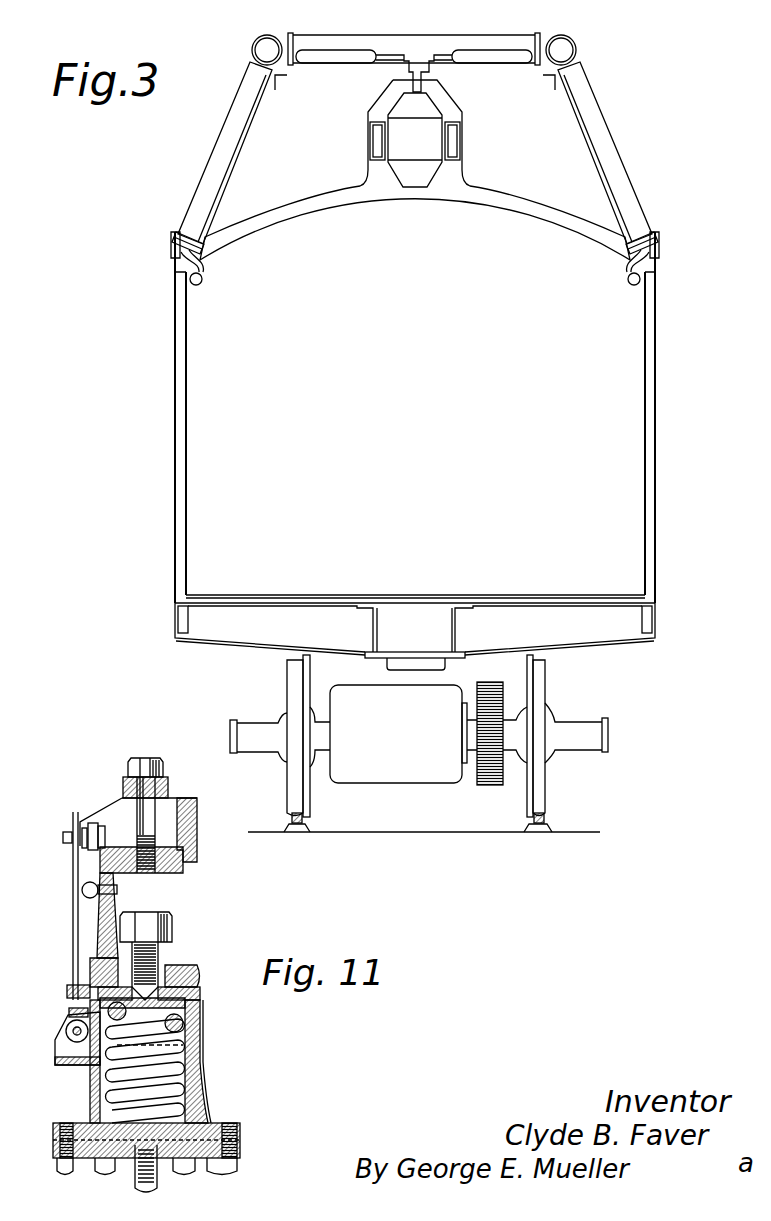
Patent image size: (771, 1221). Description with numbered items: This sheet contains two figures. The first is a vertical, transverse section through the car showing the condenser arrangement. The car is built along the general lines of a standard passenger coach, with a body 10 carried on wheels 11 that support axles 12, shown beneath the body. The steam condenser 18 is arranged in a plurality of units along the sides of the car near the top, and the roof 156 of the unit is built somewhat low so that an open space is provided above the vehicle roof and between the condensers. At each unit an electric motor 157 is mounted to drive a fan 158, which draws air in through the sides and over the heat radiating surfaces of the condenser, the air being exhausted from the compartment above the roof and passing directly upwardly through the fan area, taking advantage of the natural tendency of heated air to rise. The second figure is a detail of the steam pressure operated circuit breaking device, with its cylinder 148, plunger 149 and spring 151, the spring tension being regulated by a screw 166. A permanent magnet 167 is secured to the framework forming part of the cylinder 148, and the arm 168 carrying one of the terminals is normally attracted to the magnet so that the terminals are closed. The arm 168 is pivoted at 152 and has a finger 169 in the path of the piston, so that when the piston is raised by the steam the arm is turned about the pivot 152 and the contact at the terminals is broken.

In FIG. 3, the body 10 is at (658, 386).
In FIG. 3, the wheels 11 is at (297, 785).
In FIG. 3, the axles 12 is at (322, 747).
In FIG. 3, the steam condenser 18 is at (218, 136).
In FIG. 11, the cylinder 148 is at (198, 1048).
In FIG. 11, the plunger 149 is at (190, 1092).
In FIG. 11, the spring 151 is at (187, 1027).
In FIG. 11, the pivot 152 is at (70, 1022).
In FIG. 3, the roof 156 is at (501, 200).
In FIG. 3, the electric motor 157 is at (427, 110).
In FIG. 3, the fan 158 is at (486, 52).
In FIG. 11, the screw 166 is at (160, 952).
In FIG. 11, the permanent magnet 167 is at (105, 838).
In FIG. 11, the arm 168 is at (73, 876).
In FIG. 11, the finger 169 is at (90, 1040).